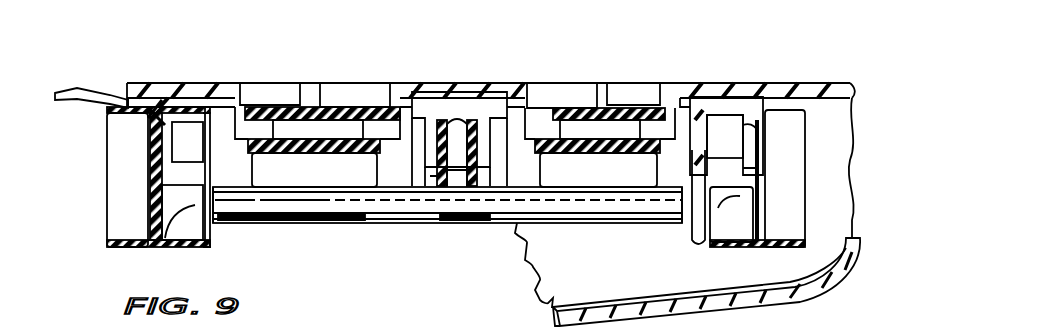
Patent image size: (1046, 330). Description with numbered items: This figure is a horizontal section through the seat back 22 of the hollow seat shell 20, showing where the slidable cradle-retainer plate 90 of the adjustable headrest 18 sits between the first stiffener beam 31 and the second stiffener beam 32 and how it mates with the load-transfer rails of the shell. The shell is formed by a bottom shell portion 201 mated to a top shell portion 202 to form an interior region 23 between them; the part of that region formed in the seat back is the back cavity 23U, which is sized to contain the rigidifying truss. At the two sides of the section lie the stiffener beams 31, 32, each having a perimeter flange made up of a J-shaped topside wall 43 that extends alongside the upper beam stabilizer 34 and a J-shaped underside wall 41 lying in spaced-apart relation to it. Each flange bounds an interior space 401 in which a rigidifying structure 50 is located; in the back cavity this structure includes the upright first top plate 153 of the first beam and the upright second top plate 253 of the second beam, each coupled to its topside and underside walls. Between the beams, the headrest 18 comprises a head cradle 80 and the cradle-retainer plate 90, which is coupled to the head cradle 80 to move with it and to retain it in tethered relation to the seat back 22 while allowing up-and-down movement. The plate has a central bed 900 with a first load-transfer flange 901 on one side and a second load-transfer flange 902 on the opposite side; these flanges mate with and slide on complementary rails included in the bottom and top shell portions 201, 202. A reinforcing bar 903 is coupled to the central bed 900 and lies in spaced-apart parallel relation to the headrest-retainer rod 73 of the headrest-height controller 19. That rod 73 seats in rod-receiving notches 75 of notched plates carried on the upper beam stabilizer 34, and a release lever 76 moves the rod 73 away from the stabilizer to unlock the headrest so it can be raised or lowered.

The adjustable headrest 18 is at (58, 88).
The hollow seat shell 20 is at (80, 90).
The J-shaped topside wall 43 is at (150, 108).
The central bed 900 is at (341, 148).
The release lever 76 is at (478, 110).
The head cradle 80 is at (536, 80).
The slidable cradle-retainer plate 90 is at (616, 133).
The top shell portion 202 is at (809, 84).
The upper beam stabilizer 34 is at (148, 153).
The interior space 401 is at (123, 192).
The first stiffener beam 31 is at (105, 200).
The rigidifying structure 50 is at (126, 210).
The J-shaped underside wall 41 is at (162, 222).
The upright second top plate 253 is at (193, 240).
The bottom shell portion 201 is at (215, 203).
The headrest-height controller 19 is at (322, 226).
The rod-receiving notches 75 is at (236, 202).
The headrest-retainer rod 73 is at (362, 194).
The reinforcing bar 903 is at (500, 210).
The first load-transfer flange 901 is at (290, 172).
The second load-transfer flange 902 is at (642, 184).
The upright first top plate 153 is at (733, 214).
The second stiffener beam 32 is at (735, 236).
The interior region 23 is at (824, 237).
The back cavity 23U is at (836, 175).
The seat back 22 is at (780, 300).